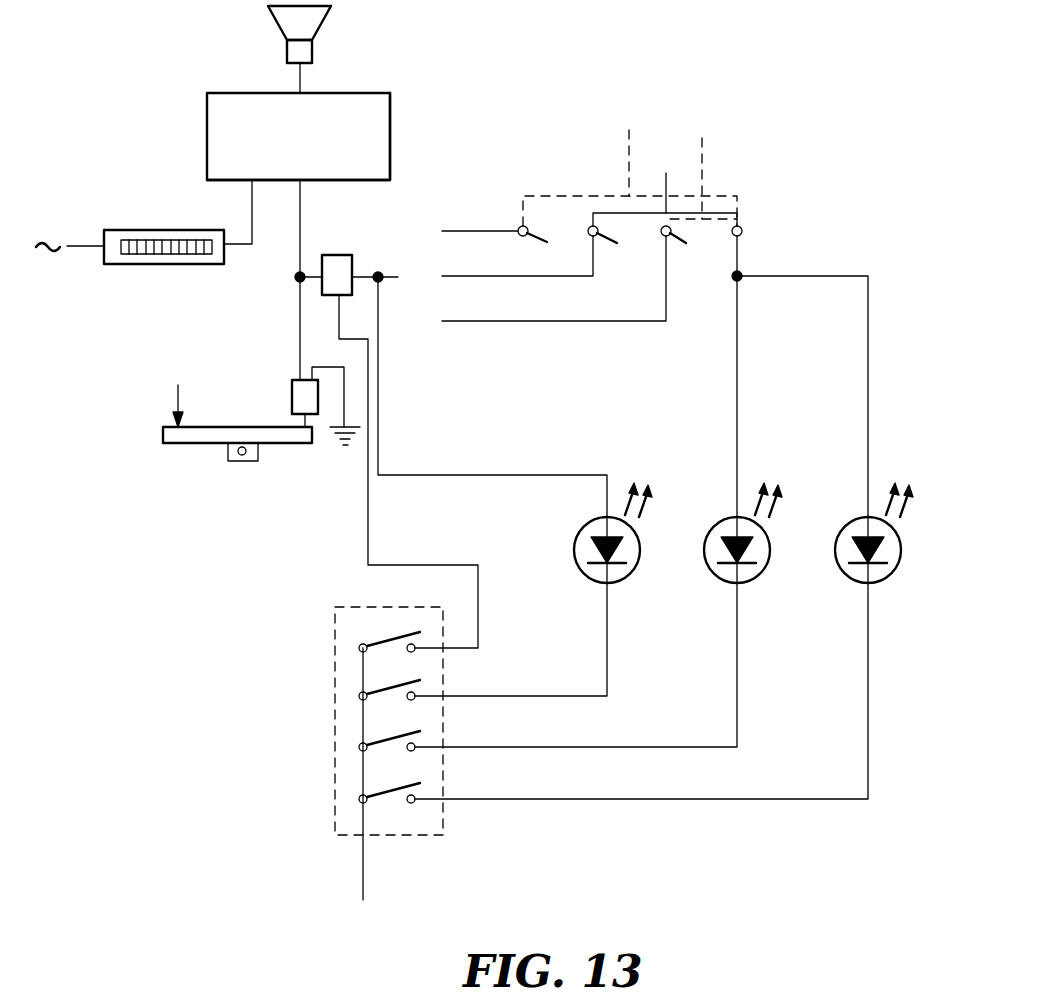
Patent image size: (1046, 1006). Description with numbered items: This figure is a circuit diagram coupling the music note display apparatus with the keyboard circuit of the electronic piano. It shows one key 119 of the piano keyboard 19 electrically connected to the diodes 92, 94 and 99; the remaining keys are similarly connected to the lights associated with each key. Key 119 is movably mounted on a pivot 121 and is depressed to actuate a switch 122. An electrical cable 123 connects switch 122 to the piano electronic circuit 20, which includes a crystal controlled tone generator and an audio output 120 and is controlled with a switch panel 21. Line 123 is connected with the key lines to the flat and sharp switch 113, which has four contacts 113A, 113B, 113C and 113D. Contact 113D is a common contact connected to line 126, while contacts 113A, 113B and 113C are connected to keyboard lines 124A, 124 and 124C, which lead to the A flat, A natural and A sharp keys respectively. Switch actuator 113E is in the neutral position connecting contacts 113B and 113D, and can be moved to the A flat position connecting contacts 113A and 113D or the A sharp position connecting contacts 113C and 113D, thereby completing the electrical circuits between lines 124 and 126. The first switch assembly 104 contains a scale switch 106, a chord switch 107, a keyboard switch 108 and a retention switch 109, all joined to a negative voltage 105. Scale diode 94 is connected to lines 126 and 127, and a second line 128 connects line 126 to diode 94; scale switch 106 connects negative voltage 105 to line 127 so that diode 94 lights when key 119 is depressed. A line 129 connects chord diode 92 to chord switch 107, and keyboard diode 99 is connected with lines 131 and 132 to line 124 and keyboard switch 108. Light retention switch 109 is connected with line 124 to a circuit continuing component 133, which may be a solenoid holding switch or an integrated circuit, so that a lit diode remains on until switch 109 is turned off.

The keyboard 19 is at (152, 412).
The electronic circuit 20 is at (207, 118).
The switch panel 21 is at (135, 230).
The chord diode 92 is at (730, 525).
The scale diode 94 is at (861, 525).
The keyboard diode 99 is at (587, 525).
The first switch assembly 104 is at (342, 607).
The negative voltage 105 is at (342, 910).
The scale switch 106 is at (384, 795).
The chord switch 107 is at (384, 743).
The keyboard switch 108 is at (384, 692).
The retention switch 109 is at (384, 644).
The A flat and sharp switch 113 is at (752, 145).
The contact 113A is at (559, 249).
The contact 113B is at (662, 228).
The contact 113C is at (697, 248).
The common contact 113D is at (742, 231).
The switch actuator 113E is at (612, 213).
The key 119 is at (193, 440).
The audio output 120 is at (287, 53).
The pivot 121 is at (242, 461).
The switch 122 is at (303, 395).
The electrical cable 123 is at (300, 299).
The keyboard line 124 is at (378, 270).
The keyboard line 124A is at (488, 231).
The keyboard line 124C is at (528, 321).
The line 126 is at (738, 253).
The line 127 is at (868, 752).
The second line 128 is at (738, 372).
The line 129 is at (738, 692).
The line 131 is at (422, 477).
The line 132 is at (607, 654).
The circuit continuing component 133 is at (337, 255).